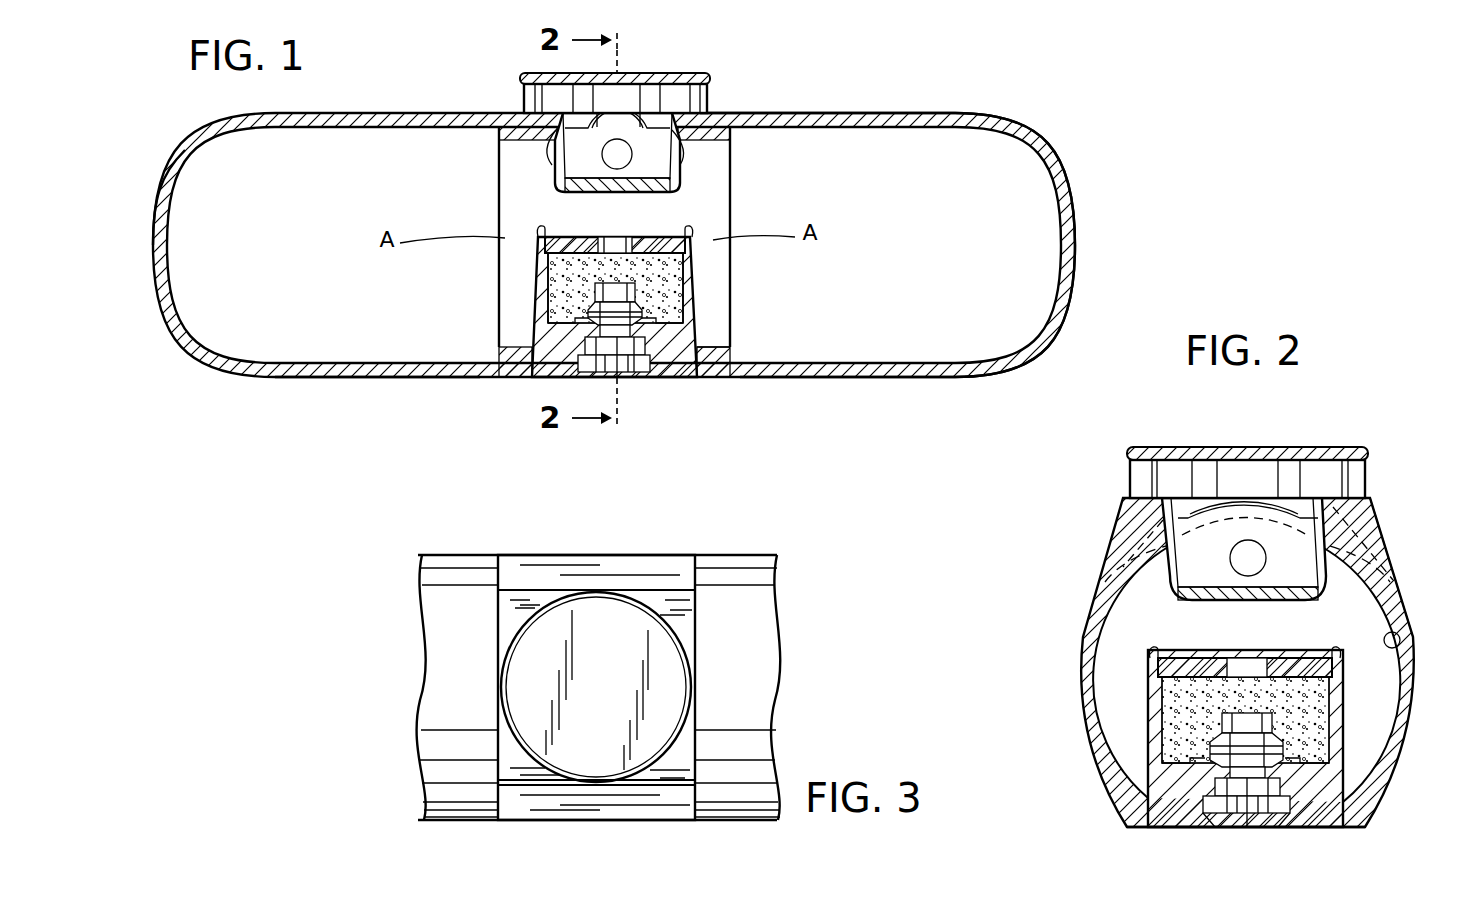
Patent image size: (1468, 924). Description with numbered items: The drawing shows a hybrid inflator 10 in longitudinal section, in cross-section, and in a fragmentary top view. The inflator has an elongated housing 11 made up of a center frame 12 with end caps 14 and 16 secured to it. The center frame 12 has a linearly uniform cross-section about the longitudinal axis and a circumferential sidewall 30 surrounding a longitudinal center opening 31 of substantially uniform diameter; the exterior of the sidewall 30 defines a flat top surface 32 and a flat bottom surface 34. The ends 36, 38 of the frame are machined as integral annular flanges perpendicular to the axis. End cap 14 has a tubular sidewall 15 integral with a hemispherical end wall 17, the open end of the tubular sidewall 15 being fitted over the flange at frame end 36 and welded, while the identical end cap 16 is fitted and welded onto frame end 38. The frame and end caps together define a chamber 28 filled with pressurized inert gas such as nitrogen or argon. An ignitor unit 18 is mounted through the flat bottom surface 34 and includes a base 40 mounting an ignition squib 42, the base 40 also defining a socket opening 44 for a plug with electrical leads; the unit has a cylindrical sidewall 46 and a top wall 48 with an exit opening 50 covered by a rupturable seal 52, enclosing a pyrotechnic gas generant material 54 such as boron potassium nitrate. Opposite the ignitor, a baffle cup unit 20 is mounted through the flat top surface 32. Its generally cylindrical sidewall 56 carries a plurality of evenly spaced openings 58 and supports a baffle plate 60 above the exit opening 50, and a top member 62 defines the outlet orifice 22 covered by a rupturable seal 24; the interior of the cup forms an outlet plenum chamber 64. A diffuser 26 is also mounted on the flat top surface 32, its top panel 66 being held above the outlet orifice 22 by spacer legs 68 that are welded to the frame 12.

In FIG. 1, the hybrid inflator 10 is at (614, 229).
In FIG. 1, the elongated housing 11 is at (935, 112).
In FIG. 1, the center frame 12 is at (614, 234).
In FIG. 3, the center frame 12 is at (661, 673).
In FIG. 1, the end cap 14 is at (291, 376).
In FIG. 3, the end cap 14 is at (432, 748).
In FIG. 1, the tubular sidewall 15 is at (350, 378).
In FIG. 1, the end cap 16 is at (873, 378).
In FIG. 3, the end cap 16 is at (758, 680).
In FIG. 1, the hemispherical end wall 17 is at (197, 350).
In FIG. 1, the ignitor unit 18 is at (607, 315).
In FIG. 2, the ignitor unit 18 is at (1245, 737).
In FIG. 1, the baffle cup unit 20 is at (667, 192).
In FIG. 1, the outlet orifice 22 is at (598, 115).
In FIG. 1, the rupturable seal 24 is at (641, 115).
In FIG. 1, the diffuser 26 is at (624, 76).
In FIG. 3, the diffuser 26 is at (596, 729).
In FIG. 2, the diffuser 26 is at (1215, 442).
In FIG. 1, the chamber 28 is at (240, 249).
In FIG. 2, the circumferential sidewall 30 is at (1400, 680).
In FIG. 1, the longitudinal center opening 31 is at (730, 352).
In FIG. 2, the longitudinal center opening 31 is at (1400, 645).
In FIG. 3, the flat top surface 32 is at (692, 622).
In FIG. 2, the flat bottom surface 34 is at (1350, 827).
In FIG. 1, the end of center frame 36 is at (500, 140).
In FIG. 1, the end of center frame 38 is at (722, 140).
In FIG. 1, the base 40 is at (680, 378).
In FIG. 1, the ignition squib 42 is at (655, 312).
In FIG. 1, the socket opening 44 is at (630, 378).
In FIG. 1, the cylindrical sidewall 46 is at (548, 285).
In FIG. 1, the top wall 48 is at (545, 248).
In FIG. 1, the exit opening 50 is at (617, 237).
In FIG. 1, the rupturable seal 52 is at (595, 237).
In FIG. 1, the pyrotechnic gas generant material 54 is at (548, 270).
In FIG. 1, the cylindrical sidewall 56 is at (674, 150).
In FIG. 1, the openings 58 is at (557, 160).
In FIG. 2, the openings 58 is at (1166, 548).
In FIG. 1, the baffle plate 60 is at (559, 159).
In FIG. 2, the baffle plate 60 is at (1264, 571).
In FIG. 1, the top member 62 is at (528, 96).
In FIG. 1, the outlet plenum chamber 64 is at (567, 151).
In FIG. 2, the outlet plenum chamber 64 is at (1272, 565).
In FIG. 1, the top panel 66 is at (546, 76).
In FIG. 3, the top panel 66 is at (583, 693).
In FIG. 2, the top panel 66 is at (1298, 447).
In FIG. 1, the spacer legs 68 is at (585, 85).
In FIG. 2, the spacer legs 68 is at (1130, 478).